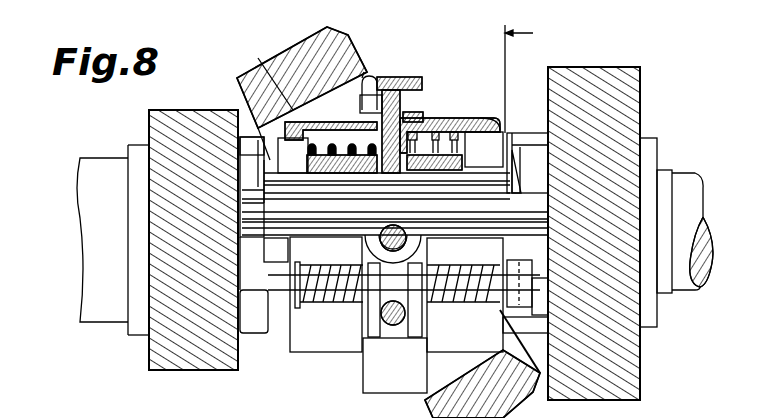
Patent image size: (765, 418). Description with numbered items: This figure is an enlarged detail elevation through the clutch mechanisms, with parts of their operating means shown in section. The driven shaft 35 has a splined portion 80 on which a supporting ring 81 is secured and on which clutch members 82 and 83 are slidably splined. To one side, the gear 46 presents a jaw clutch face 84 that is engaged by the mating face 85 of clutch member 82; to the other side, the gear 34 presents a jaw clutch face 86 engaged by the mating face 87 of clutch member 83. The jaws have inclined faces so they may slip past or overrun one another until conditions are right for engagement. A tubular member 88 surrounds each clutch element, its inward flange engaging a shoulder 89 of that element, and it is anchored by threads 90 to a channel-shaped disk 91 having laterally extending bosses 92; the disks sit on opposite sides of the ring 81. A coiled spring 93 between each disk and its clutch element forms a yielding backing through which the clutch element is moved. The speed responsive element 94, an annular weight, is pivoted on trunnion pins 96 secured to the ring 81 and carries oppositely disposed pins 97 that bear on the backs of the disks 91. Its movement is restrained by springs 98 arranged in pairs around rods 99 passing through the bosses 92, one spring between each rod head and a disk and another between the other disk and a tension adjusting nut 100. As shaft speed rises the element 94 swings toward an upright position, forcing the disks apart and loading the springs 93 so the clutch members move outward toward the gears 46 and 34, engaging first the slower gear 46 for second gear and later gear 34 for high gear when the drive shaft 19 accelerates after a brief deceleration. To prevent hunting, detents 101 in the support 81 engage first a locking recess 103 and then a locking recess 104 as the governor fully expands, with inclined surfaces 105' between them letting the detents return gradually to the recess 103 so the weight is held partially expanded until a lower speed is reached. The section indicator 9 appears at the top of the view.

The section line 9 is at (525, 79).
The drive shaft 19 is at (76, 270).
The gear 34 is at (173, 104).
The shaft 35 is at (709, 195).
The gear 46 is at (605, 61).
The splined portion 80 is at (500, 206).
The supporting ring 81 is at (412, 78).
The clutch member 82 is at (470, 128).
The clutch member 83 is at (294, 130).
The jaw clutch face 84 is at (517, 152).
The mating face 85 is at (505, 132).
The jaw clutch face 86 is at (262, 148).
The mating face 87 is at (272, 163).
The tubular member 88 is at (458, 116).
The shoulder 89 is at (390, 152).
The threads 90 is at (418, 112).
The disk 91 is at (332, 130).
The bosses 92 is at (368, 322).
The coiled spring 93 is at (330, 173).
The speed responsive element 94 is at (238, 78).
The trunnion pins 96 is at (422, 247).
The pins 97 is at (392, 326).
The springs 98 is at (476, 304).
The rods 99 is at (326, 268).
The tension adjusting nut 100 is at (502, 330).
The detents 101 is at (392, 78).
The locking recess 103 is at (362, 72).
The locking recess 104 is at (258, 58).
The inclined surfaces 105' is at (302, 89).